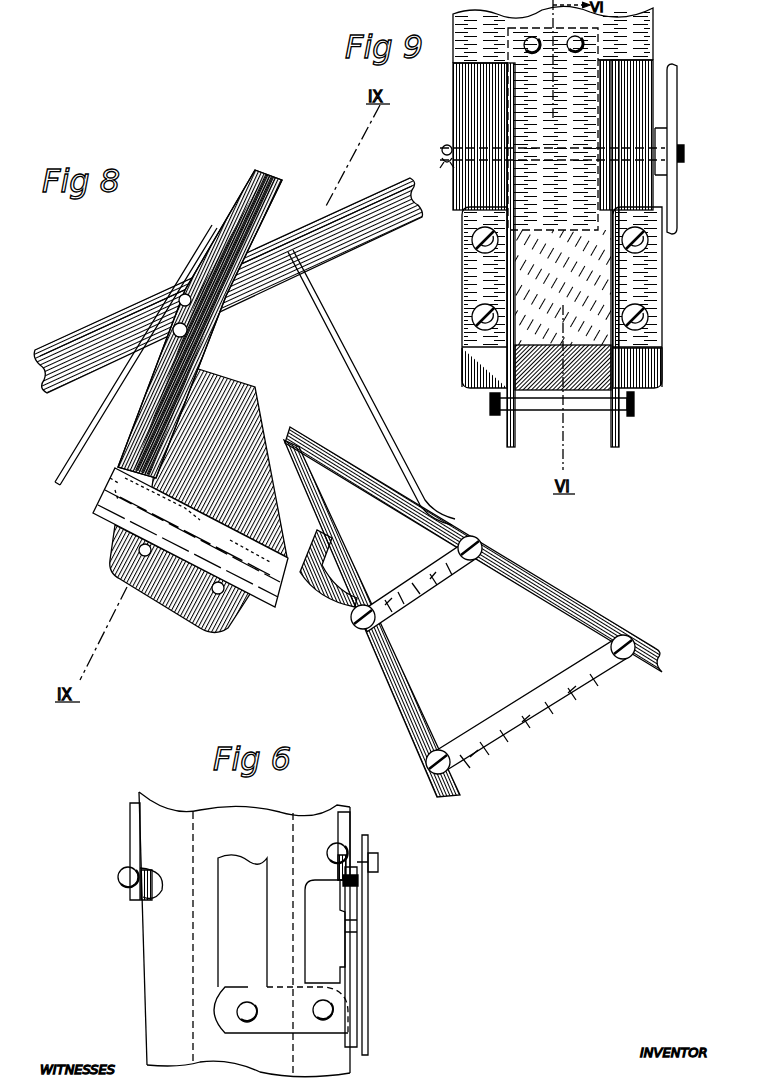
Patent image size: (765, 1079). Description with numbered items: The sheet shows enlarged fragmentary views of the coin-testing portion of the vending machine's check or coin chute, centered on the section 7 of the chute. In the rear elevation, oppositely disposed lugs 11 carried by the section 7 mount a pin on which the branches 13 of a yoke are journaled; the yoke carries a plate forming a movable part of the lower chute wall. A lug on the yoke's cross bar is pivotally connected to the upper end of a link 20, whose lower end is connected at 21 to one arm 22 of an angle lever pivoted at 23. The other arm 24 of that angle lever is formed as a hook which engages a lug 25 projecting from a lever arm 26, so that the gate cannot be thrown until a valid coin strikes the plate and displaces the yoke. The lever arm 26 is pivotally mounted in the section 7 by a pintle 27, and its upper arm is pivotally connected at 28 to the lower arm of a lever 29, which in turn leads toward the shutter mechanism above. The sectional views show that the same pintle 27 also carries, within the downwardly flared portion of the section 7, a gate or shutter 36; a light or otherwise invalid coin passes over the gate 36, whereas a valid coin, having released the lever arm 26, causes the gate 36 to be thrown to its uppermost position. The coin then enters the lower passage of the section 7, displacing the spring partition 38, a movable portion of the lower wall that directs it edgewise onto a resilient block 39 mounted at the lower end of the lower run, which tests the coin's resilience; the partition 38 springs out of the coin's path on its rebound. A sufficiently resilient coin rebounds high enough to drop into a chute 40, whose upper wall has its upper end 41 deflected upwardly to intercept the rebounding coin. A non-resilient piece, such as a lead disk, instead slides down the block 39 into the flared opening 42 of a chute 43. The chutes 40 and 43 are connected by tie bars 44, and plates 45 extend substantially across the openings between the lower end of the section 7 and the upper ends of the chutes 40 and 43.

In FIG. 8, the section of the chute 7 is at (200, 306).
In FIG. 6, the section of the chute 7 is at (140, 1013).
In FIG. 6, the lugs 11 is at (143, 903).
In FIG. 6, the branches of a yoke 13 is at (130, 832).
In FIG. 6, the link 20 is at (242, 921).
In FIG. 6, the connection of link to arm 21 is at (246, 1020).
In FIG. 6, the arm of angle lever 22 is at (281, 1010).
In FIG. 6, the pivot of angle lever 23 is at (331, 1010).
In FIG. 6, the hook arm 24 is at (325, 945).
In FIG. 6, the lug 25 is at (358, 910).
In FIG. 9, the lever arm 26 is at (678, 96).
In FIG. 8, the lever arm 26 is at (97, 326).
In FIG. 6, the lever arm 26 is at (370, 1045).
In FIG. 9, the pintle 27 is at (442, 155).
In FIG. 8, the pintle 27 is at (182, 296).
In FIG. 6, the pivotal connection 28 is at (360, 877).
In FIG. 6, the lever 29 is at (380, 845).
In FIG. 8, the gate or shutter 36 is at (232, 242).
In FIG. 9, the spring partition 38 is at (563, 287).
In FIG. 8, the spring partition 38 is at (200, 327).
In FIG. 9, the resilient block 39 is at (540, 405).
In FIG. 8, the resilient block 39 is at (105, 500).
In FIG. 8, the chute 40 is at (320, 440).
In FIG. 8, the upper end of chute upper wall 41 is at (330, 332).
In FIG. 8, the flared opening 42 is at (314, 575).
In FIG. 8, the chute 43 is at (398, 696).
In FIG. 8, the tie bars 44 is at (432, 593).
In FIG. 9, the plates 45 is at (662, 287).
In FIG. 8, the plates 45 is at (172, 628).